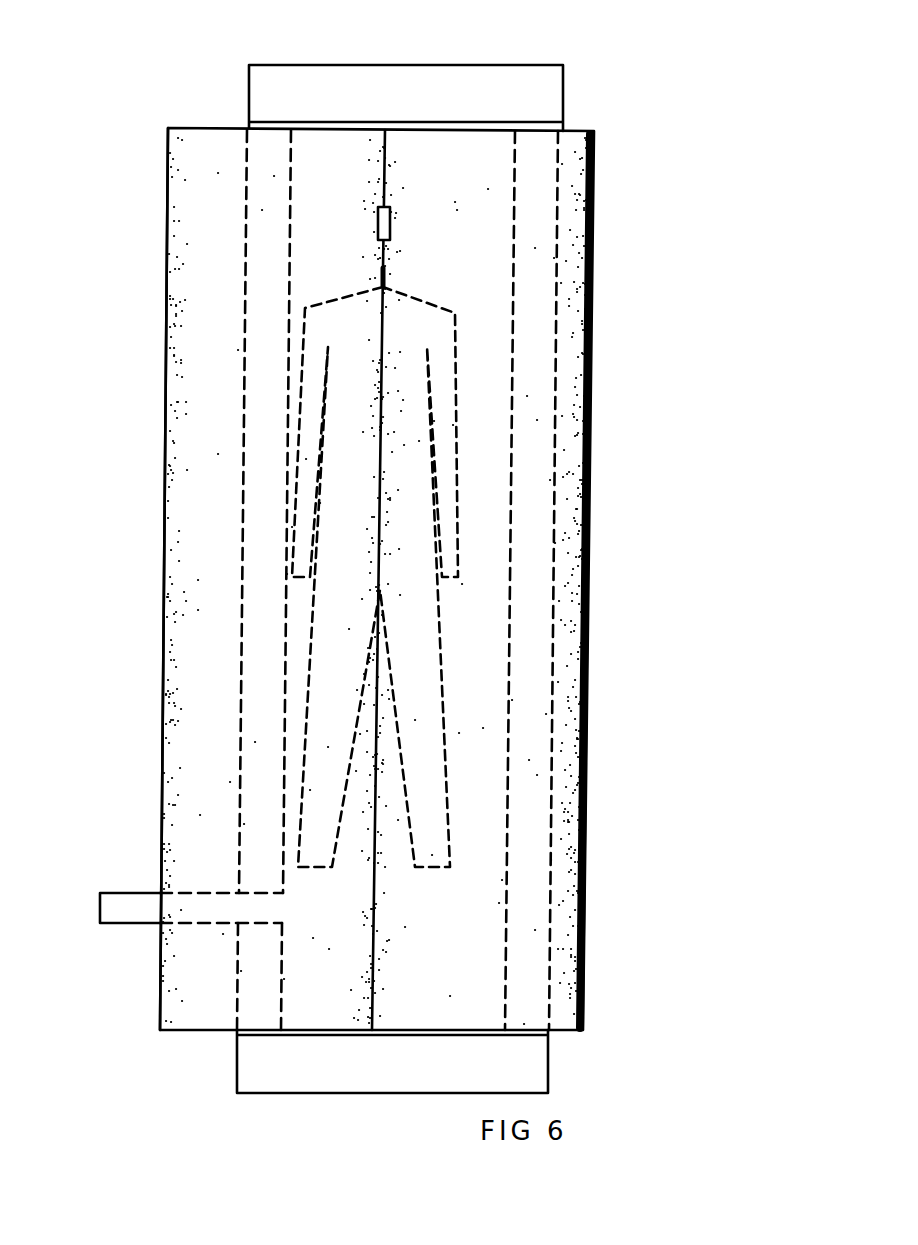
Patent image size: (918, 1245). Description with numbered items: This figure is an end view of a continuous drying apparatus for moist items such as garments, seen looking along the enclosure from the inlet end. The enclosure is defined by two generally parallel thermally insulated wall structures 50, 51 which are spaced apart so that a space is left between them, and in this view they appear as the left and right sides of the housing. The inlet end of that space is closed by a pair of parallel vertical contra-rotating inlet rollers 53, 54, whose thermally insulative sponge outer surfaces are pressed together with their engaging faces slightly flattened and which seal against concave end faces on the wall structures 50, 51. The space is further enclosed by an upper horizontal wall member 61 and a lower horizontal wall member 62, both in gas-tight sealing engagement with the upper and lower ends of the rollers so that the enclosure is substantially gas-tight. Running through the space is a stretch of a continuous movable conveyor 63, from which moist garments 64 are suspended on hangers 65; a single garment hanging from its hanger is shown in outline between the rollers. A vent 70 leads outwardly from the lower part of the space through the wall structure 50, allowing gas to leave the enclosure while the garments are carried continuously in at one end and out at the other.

The thermally insulated wall structure 50 is at (252, 393).
The thermally insulated wall structure 51 is at (535, 331).
The inlet roller 53 is at (183, 583).
The inlet roller 54 is at (568, 603).
The upper horizontal wall member 61 is at (545, 100).
The lower horizontal wall member 62 is at (527, 1073).
The continuous movable conveyor 63 is at (379, 217).
The moist garments 64 is at (422, 493).
The hangers 65 is at (385, 271).
The vent 70 is at (114, 912).